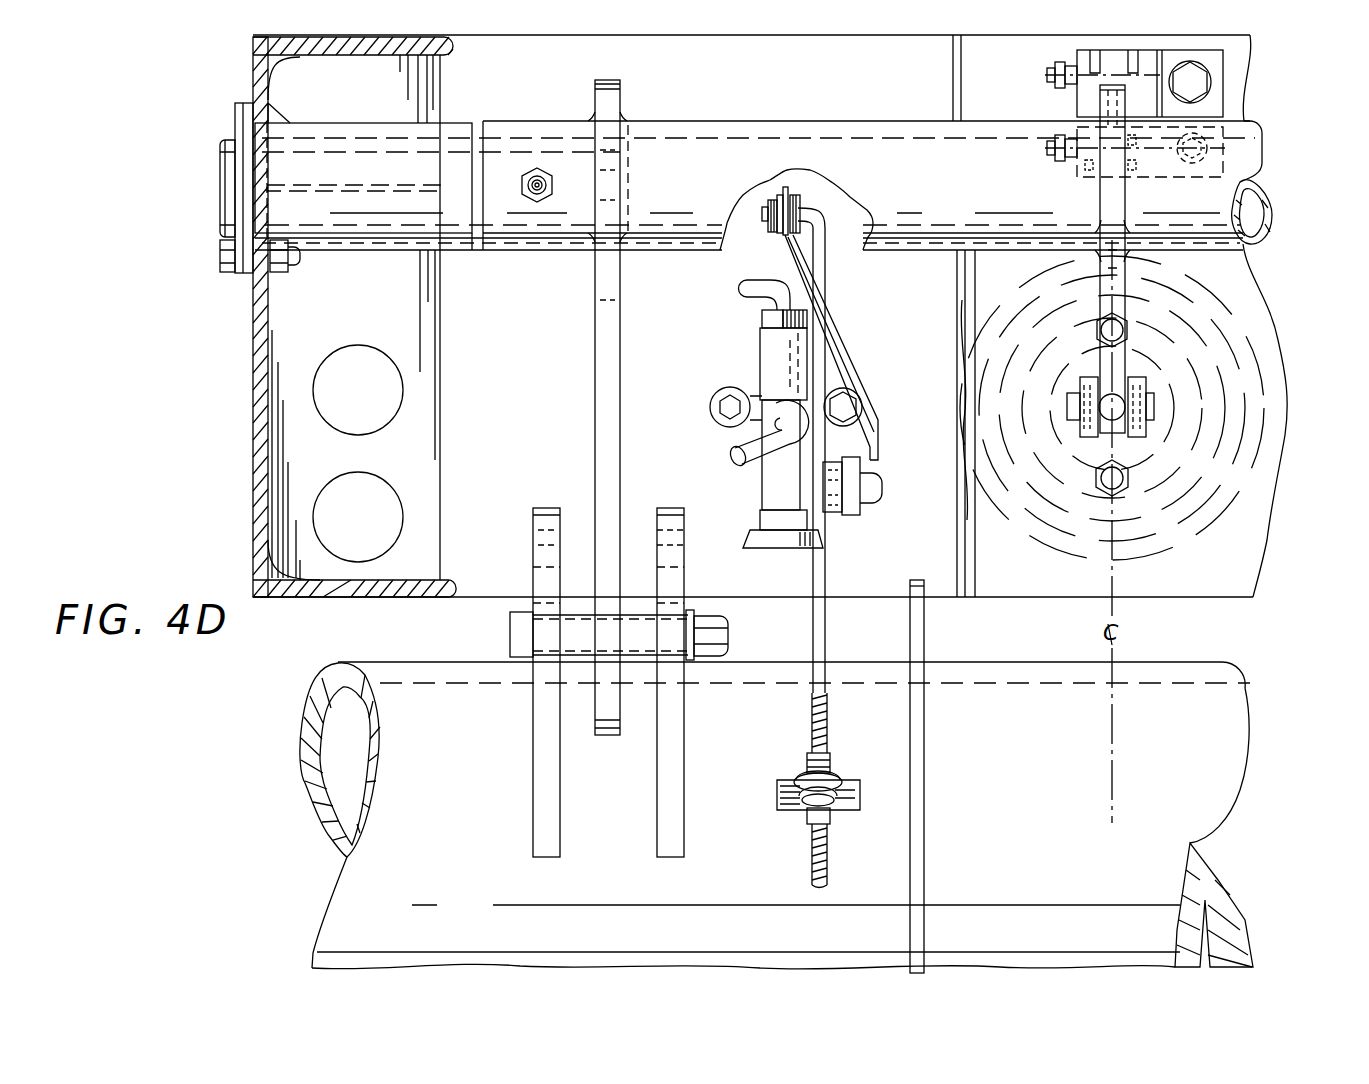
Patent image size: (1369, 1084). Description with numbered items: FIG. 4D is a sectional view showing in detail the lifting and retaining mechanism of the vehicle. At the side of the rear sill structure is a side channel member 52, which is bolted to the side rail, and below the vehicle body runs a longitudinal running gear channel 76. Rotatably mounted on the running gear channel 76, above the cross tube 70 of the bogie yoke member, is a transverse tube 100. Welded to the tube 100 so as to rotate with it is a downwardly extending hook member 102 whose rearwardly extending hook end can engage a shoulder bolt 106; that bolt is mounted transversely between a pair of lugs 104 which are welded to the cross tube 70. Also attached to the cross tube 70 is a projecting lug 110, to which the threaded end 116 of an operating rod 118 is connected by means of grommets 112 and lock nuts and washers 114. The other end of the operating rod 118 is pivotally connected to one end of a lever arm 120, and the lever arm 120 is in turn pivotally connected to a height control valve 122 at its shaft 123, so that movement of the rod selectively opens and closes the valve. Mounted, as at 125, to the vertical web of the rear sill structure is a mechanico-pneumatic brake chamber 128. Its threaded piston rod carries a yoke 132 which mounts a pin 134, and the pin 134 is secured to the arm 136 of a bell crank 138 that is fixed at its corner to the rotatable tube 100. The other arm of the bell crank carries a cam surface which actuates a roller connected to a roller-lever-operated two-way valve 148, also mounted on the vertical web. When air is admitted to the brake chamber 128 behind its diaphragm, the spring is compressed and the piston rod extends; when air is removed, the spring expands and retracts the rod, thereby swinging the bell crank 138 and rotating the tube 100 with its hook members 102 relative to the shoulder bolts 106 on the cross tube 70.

The side channel member 52 is at (252, 62).
The longitudinal running gear channel 76 is at (250, 325).
The transverse tube 100 is at (555, 228).
The hook member 102 is at (604, 307).
The lug 104 is at (545, 710).
The shoulder bolt 106 is at (648, 608).
The projecting lug 110 is at (857, 795).
The grommet 112 is at (792, 800).
The lock nuts and washers 114 is at (808, 820).
The threaded end 116 is at (828, 713).
The operating rod 118 is at (823, 629).
The lever arm 120 is at (852, 380).
The height control valve 122 is at (763, 489).
The shaft 123 is at (886, 488).
The mounting 125 is at (1128, 330).
The mechanico-pneumatic brake chamber 128 is at (1262, 448).
The yoke 132 is at (1090, 434).
The pin 134 is at (1150, 410).
The arm 136 is at (1124, 268).
The bell crank 138 is at (1106, 95).
The roller-lever-operated 2-way valve 148 is at (1094, 168).
The cross tube 70 is at (1250, 690).